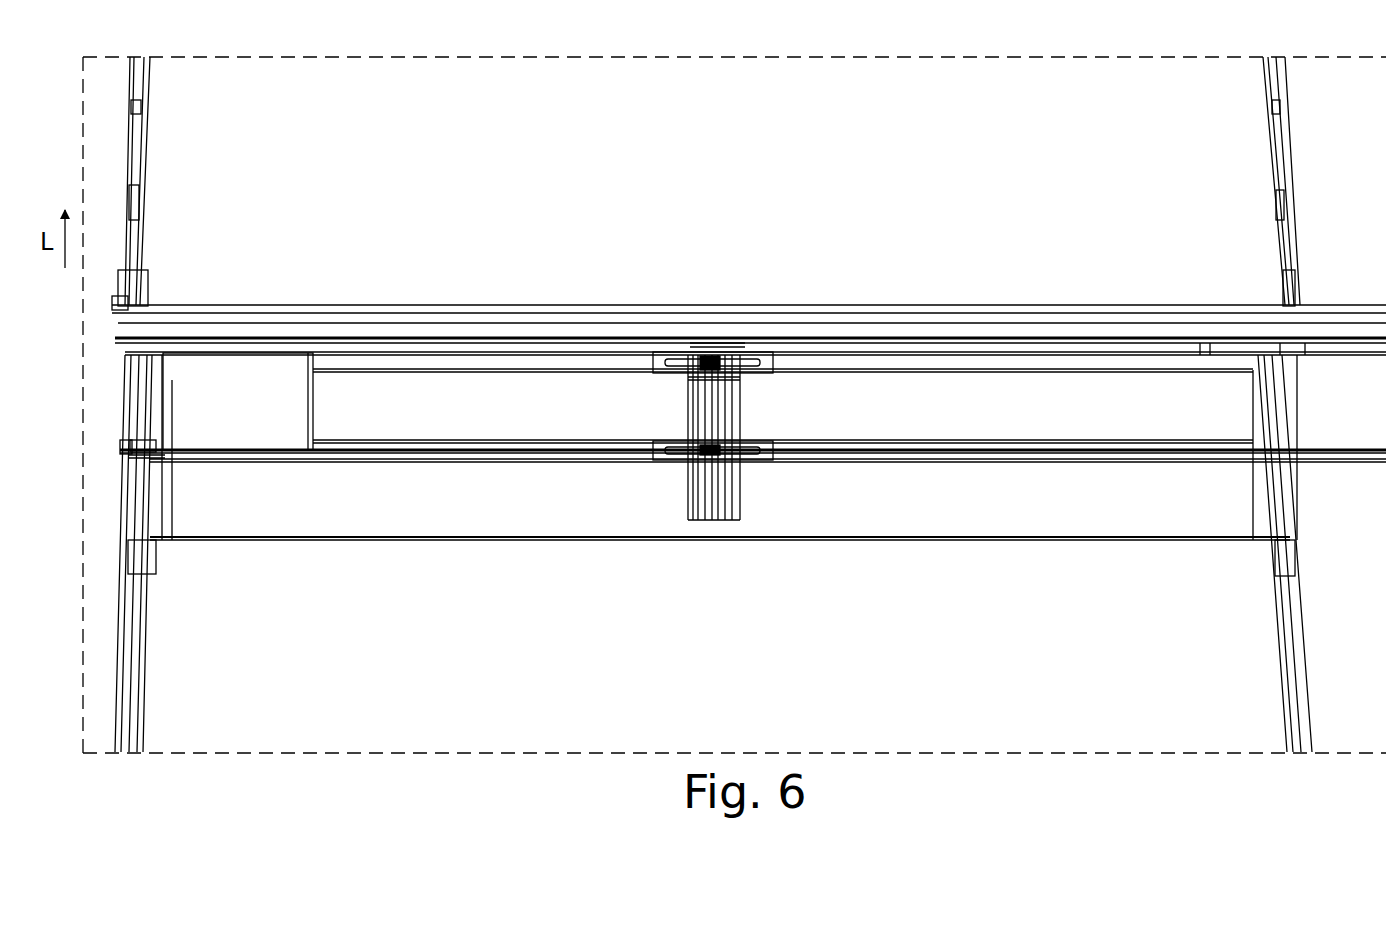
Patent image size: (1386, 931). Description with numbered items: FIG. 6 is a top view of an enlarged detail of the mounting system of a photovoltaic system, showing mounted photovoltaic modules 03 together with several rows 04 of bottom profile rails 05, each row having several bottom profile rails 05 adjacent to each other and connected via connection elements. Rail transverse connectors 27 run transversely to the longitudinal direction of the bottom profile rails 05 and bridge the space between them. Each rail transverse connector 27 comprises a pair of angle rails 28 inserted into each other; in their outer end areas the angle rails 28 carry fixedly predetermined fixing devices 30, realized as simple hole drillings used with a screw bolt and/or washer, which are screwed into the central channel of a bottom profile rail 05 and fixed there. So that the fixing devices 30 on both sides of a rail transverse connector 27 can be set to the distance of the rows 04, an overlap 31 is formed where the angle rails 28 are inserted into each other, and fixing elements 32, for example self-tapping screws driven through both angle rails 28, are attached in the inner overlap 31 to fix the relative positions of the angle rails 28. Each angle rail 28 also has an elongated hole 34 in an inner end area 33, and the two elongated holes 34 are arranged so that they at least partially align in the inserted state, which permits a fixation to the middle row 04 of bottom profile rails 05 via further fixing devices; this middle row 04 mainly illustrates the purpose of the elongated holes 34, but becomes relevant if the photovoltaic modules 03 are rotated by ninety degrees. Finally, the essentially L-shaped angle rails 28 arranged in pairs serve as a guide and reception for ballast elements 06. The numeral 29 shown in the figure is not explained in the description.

The photovoltaic module 03 is at (692, 198).
The row of bottom profile rails 04 is at (165, 490).
The bottom profile rail 05 is at (128, 113).
The ballast element 06 is at (240, 372).
The rail transverse connector 27 is at (505, 372).
The angle rail 28 is at (350, 443).
The connecting element 29 is at (1205, 355).
The fixing device 30 is at (1300, 355).
The overlap 31 is at (662, 466).
The fixing element 32 is at (663, 352).
The inner end area 33 is at (737, 338).
The elongated hole 34 is at (680, 362).